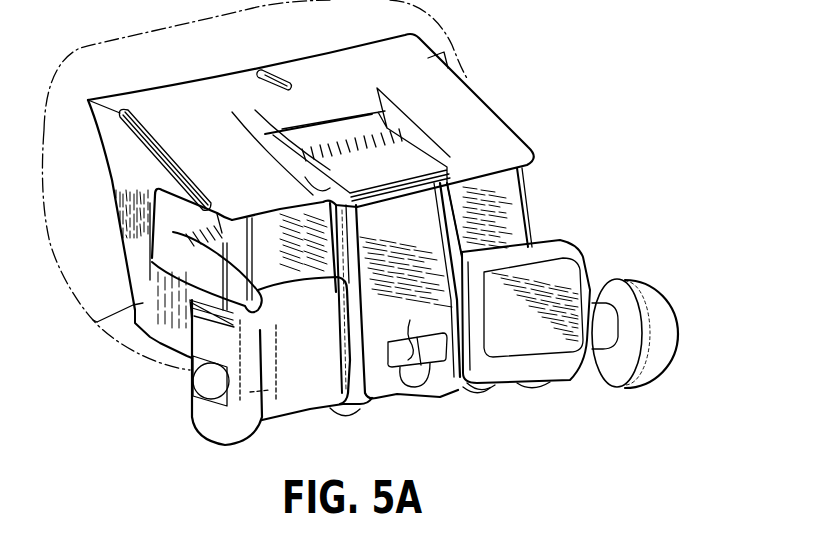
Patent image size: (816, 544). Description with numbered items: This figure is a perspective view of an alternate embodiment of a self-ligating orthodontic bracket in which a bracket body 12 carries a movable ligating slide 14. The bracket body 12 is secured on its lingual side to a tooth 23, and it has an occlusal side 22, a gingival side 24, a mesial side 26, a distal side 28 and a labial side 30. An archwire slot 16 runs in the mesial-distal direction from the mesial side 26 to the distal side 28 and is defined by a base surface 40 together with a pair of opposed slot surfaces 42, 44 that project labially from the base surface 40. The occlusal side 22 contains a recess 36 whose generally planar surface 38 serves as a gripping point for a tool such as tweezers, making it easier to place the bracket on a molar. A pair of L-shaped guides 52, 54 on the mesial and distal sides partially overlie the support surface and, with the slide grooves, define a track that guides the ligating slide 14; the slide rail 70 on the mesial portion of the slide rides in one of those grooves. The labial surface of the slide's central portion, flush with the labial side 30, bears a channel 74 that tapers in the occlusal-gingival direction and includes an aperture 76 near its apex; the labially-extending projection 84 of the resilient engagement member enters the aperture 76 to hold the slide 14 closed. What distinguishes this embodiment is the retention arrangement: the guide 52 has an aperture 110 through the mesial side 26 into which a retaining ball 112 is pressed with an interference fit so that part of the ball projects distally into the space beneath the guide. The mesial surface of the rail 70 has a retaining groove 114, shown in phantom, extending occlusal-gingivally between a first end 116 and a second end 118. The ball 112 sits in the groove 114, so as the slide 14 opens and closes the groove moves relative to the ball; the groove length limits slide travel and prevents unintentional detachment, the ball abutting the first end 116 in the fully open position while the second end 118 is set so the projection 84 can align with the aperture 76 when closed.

The bracket body 12 is at (478, 90).
The ligating slide 14 is at (533, 200).
The archwire slot 16 is at (165, 233).
The occlusal side 22 is at (122, 100).
The tooth 23 is at (136, 44).
The gingival side 24 is at (147, 347).
The mesial side 26 is at (97, 322).
The distal side 28 is at (563, 240).
The labial side 30 is at (555, 331).
The recess 36 is at (342, 124).
The planar surface 38 is at (280, 132).
The base surface 40 is at (150, 205).
The slot surface 42 is at (212, 178).
The slot surface 44 is at (147, 280).
The guide 52 is at (317, 400).
The guide 54 is at (547, 342).
The slide rail 70 is at (243, 258).
The channel 74 is at (413, 242).
The aperture 76 is at (428, 383).
The projection 84 is at (413, 337).
The aperture 110 is at (200, 417).
The retaining ball 112 is at (212, 380).
The retaining groove 114 is at (268, 322).
The first end 116 is at (265, 298).
The second end 118 is at (272, 391).